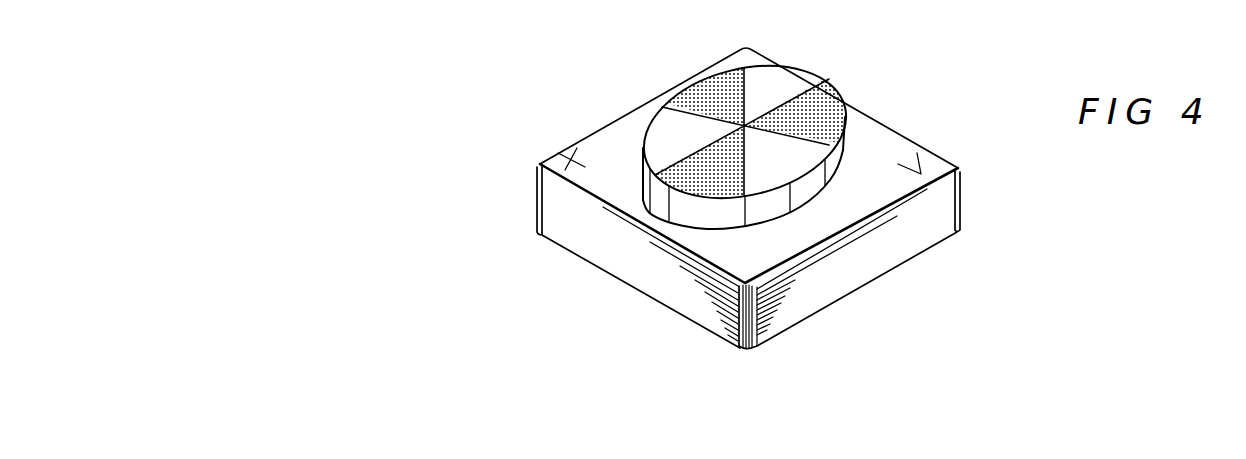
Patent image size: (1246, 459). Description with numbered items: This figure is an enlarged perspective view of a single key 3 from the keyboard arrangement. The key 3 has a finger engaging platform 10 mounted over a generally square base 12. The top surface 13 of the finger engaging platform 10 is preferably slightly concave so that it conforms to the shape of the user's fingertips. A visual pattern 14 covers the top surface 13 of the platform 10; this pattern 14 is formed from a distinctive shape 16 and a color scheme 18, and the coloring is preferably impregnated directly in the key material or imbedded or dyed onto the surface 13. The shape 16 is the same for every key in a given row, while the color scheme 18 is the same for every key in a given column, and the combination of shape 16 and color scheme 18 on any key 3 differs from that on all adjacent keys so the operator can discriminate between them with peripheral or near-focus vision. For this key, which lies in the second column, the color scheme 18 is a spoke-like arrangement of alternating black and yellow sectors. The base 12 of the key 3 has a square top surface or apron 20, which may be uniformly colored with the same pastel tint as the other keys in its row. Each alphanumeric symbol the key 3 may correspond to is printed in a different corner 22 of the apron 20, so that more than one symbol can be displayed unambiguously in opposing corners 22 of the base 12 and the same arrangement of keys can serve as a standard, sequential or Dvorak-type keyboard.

The key 3 is at (523, 222).
The finger engaging platform 10 is at (838, 138).
The base 12 is at (782, 313).
The top surface 13 is at (779, 167).
The visual pattern 14 is at (783, 88).
The shape 16 is at (777, 183).
The color scheme 18 is at (667, 136).
The apron 20 is at (734, 255).
The corner 22 is at (541, 162).